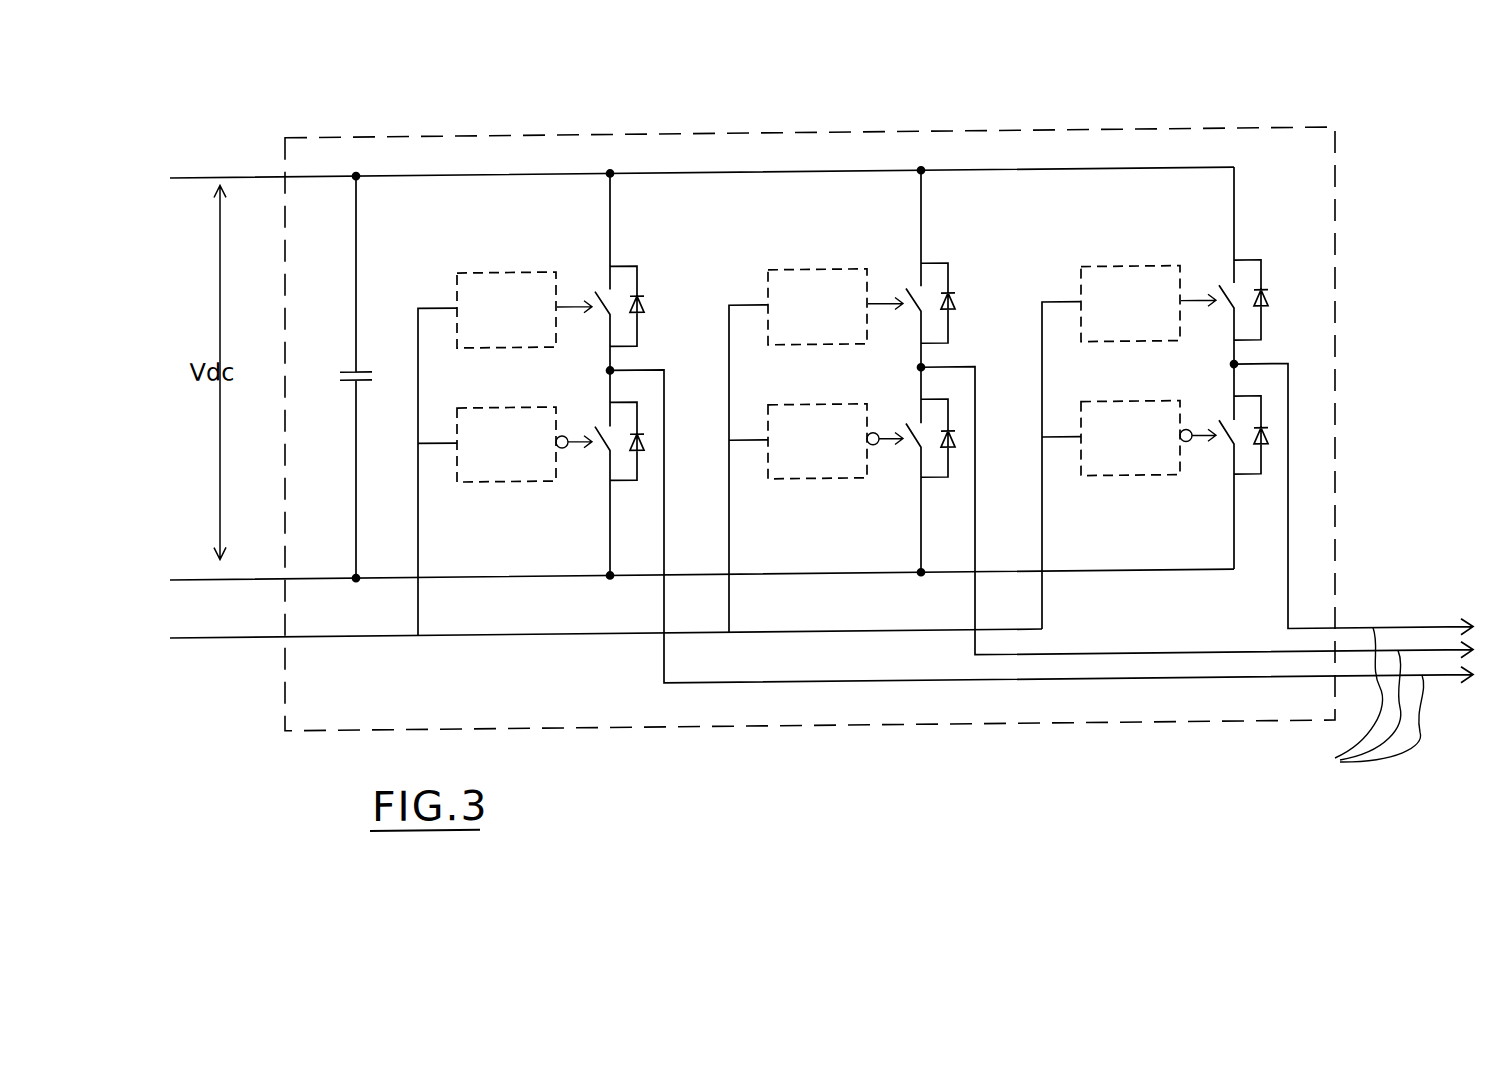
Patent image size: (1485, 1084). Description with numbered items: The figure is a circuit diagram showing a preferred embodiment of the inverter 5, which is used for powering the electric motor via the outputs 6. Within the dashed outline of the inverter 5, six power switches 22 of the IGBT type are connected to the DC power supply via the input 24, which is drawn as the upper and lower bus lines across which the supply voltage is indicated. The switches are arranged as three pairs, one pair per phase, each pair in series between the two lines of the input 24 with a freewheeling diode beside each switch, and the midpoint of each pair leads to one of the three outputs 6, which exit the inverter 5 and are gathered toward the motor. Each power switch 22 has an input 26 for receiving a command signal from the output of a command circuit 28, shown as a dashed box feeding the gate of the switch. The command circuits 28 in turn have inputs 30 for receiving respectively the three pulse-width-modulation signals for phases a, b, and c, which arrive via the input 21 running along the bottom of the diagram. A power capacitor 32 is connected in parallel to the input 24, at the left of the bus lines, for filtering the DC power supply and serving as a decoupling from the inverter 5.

The inverter 5 is at (553, 138).
The outputs 6 is at (1345, 772).
The input 21 is at (270, 638).
The power switches 22 is at (598, 426).
The input 24 is at (250, 178).
The inputs 26 is at (590, 304).
The command circuits 28 is at (515, 276).
The inputs 30 is at (440, 311).
The power capacitor 32 is at (352, 374).